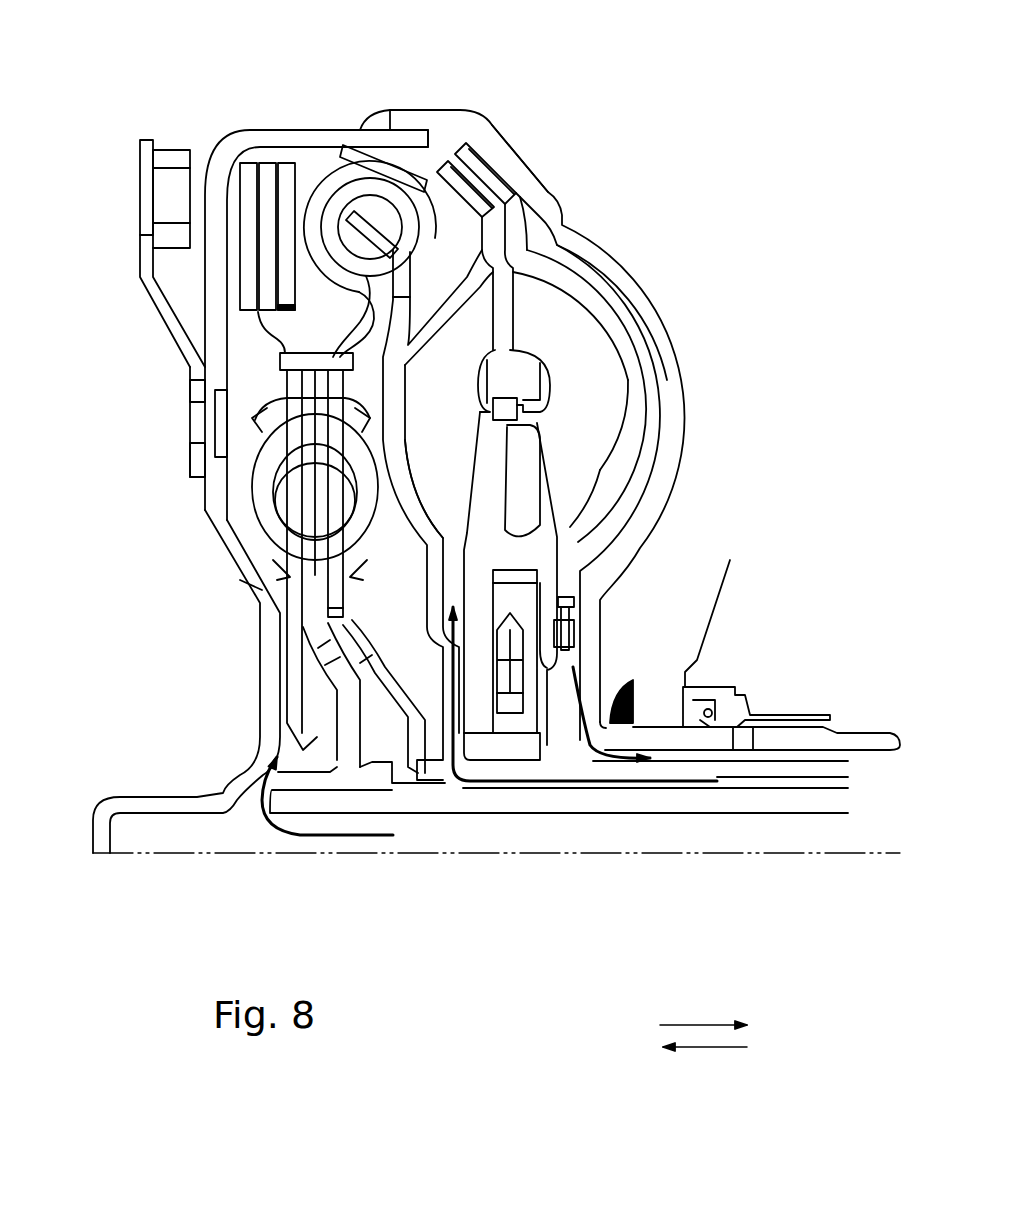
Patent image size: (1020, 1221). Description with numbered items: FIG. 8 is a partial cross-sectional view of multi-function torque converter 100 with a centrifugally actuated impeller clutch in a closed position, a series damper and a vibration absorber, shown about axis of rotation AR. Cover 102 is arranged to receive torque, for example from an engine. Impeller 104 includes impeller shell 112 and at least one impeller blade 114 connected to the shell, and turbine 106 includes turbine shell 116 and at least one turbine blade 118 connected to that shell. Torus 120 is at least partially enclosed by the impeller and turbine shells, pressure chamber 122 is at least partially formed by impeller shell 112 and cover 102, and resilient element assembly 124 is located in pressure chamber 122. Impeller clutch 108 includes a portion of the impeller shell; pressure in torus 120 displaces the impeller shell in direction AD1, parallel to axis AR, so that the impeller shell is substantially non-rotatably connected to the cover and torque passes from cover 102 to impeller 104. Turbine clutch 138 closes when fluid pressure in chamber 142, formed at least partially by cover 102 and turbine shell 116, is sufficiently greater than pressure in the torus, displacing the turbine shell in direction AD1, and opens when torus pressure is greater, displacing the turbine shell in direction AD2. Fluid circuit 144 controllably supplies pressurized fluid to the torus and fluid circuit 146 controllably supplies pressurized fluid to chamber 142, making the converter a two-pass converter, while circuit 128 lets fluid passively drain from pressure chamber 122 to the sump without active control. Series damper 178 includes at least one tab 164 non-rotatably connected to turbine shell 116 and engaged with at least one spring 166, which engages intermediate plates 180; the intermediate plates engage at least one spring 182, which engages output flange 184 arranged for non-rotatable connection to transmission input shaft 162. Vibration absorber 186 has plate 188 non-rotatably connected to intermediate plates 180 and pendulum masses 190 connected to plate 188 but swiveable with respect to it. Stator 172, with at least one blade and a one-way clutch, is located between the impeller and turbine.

The multi-function torque converter 100 is at (667, 87).
The cover 102 is at (227, 178).
The impeller 104 is at (650, 398).
The turbine 106 is at (452, 262).
The impeller clutch 108 is at (500, 130).
The impeller shell 112 is at (633, 443).
The impeller blade 114 is at (660, 283).
The turbine shell 116 is at (430, 588).
The turbine blade 118 is at (465, 368).
The torus 120 is at (557, 333).
The pressure chamber 122 is at (647, 345).
The resilient element assembly 124 is at (587, 610).
The circuit 128 is at (612, 745).
The turbine clutch 138 is at (430, 158).
The chamber 142 is at (390, 620).
The fluid circuit 144 is at (507, 818).
The fluid circuit 146 is at (270, 787).
The transmission input shaft 162 is at (450, 800).
The tab 164 is at (352, 200).
The spring 166 is at (302, 172).
The stator 172 is at (527, 487).
The series damper 178 is at (293, 163).
The intermediate plates 180 is at (360, 307).
The spring 182 is at (253, 470).
The output flange 184 is at (278, 577).
The vibration absorber 186 is at (243, 220).
The plate 188 is at (267, 267).
The pendulum masses 190 is at (153, 163).
The axis of rotation AR is at (720, 853).
The direction AD1 is at (697, 1020).
The direction AD2 is at (713, 1047).